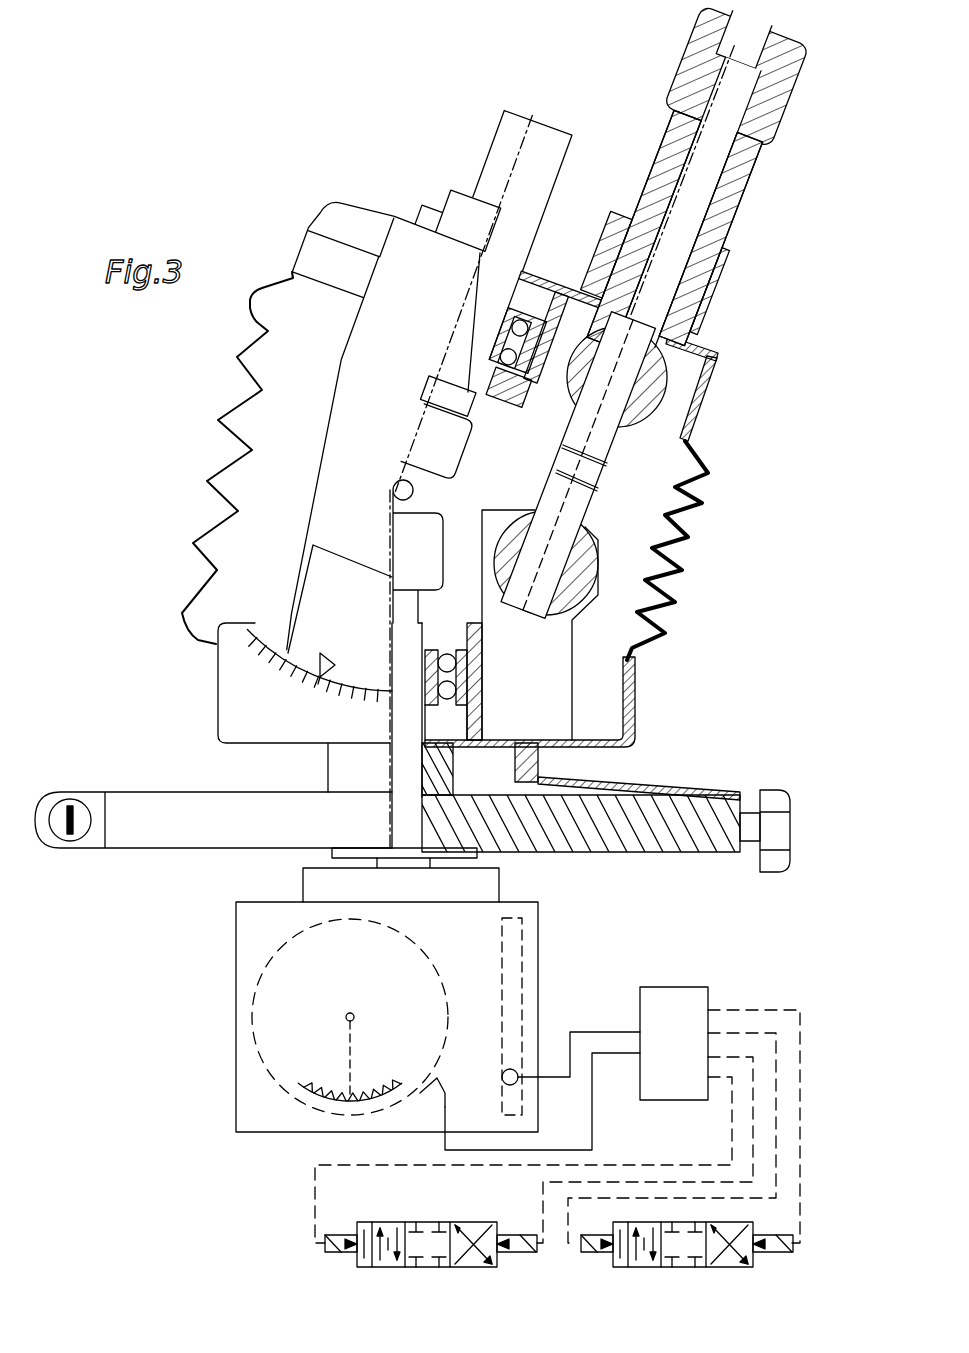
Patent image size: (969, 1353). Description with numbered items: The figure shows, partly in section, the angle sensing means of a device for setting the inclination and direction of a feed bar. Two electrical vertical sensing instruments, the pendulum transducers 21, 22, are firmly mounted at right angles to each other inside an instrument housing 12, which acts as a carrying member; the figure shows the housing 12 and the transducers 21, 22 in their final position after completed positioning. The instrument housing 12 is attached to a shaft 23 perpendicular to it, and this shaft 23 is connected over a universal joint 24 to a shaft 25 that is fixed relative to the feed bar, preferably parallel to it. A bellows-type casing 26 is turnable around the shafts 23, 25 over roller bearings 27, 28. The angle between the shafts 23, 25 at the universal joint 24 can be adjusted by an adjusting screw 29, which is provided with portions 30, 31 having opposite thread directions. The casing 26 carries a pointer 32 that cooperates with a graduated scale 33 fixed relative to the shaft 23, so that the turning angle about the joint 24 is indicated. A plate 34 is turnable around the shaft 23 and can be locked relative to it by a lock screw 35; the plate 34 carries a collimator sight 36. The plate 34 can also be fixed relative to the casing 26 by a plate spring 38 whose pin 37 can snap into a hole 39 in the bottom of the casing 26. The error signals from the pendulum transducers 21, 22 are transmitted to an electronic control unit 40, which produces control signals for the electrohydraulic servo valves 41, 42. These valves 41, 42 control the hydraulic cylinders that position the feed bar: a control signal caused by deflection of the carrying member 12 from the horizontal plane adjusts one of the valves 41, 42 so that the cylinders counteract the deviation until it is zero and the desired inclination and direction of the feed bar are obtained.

The instrument housing 12 is at (237, 967).
The pendulum transducer 21 is at (260, 1060).
The pendulum transducer 22 is at (523, 977).
The shaft 23 is at (413, 758).
The universal joint 24 is at (445, 497).
The shaft 25 is at (493, 133).
The casing 26 is at (208, 480).
The roller bearing 27 is at (521, 380).
The roller bearing 28 is at (463, 682).
The adjusting screw 29 is at (713, 222).
The portion 30 is at (616, 433).
The portion 31 is at (570, 527).
The pointer 32 is at (356, 627).
The graduated scale 33 is at (218, 690).
The plate 34 is at (167, 850).
The lock screw 35 is at (778, 872).
The collimator sight 36 is at (79, 842).
The pin 37 is at (540, 760).
The plate spring 38 is at (640, 785).
The hole 39 is at (525, 742).
The electronic control unit 40 is at (670, 995).
The electrohydraulic servo valve 41 is at (429, 1268).
The electrohydraulic servo valve 42 is at (677, 1268).